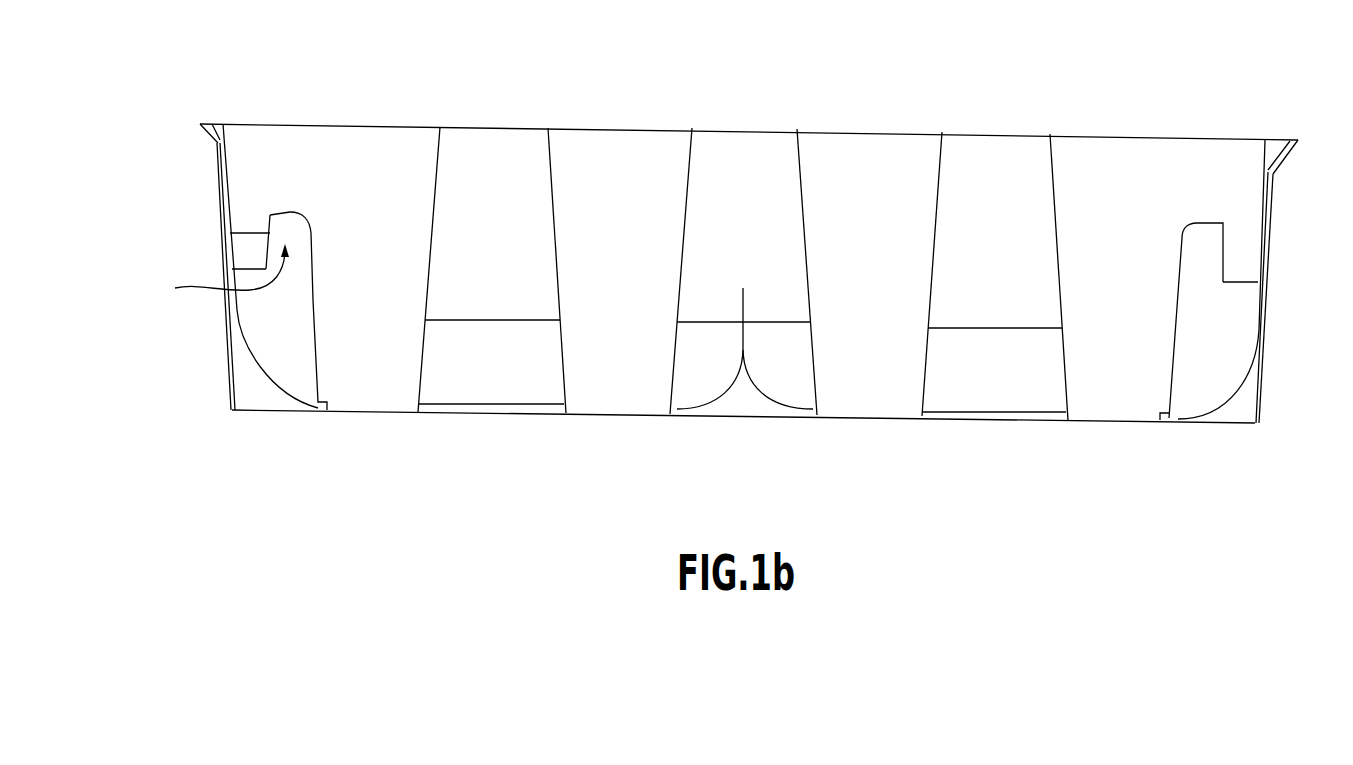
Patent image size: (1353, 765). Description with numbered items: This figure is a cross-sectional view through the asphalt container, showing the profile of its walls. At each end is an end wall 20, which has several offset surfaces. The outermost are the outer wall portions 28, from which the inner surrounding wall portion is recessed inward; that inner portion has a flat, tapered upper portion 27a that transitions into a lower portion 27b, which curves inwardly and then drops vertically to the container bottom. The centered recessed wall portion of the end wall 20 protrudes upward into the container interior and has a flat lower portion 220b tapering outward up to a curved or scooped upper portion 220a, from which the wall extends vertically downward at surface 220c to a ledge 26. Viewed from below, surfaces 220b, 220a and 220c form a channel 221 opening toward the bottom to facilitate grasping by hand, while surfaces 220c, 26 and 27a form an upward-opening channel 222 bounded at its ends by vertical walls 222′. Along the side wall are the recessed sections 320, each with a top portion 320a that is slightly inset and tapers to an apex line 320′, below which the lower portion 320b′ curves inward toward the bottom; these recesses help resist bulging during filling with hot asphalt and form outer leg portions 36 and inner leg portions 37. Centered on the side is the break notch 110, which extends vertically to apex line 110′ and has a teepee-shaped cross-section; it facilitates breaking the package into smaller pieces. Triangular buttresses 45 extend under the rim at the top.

The end wall 20 is at (1262, 383).
The ledge 26 is at (247, 260).
The upper portion of inner surrounding wall portion 27a is at (228, 155).
The lower portion of inner surrounding wall portion 27b is at (233, 368).
The outer wall portions 28 is at (231, 382).
The outer leg portions 36 is at (402, 207).
The inner leg portions 37 is at (885, 185).
The buttresses 45 is at (216, 139).
The break notch 110 is at (747, 398).
The apex line 110′ is at (745, 300).
The upper portion of recessed wall portion 220a is at (298, 214).
The lower portion of recessed wall portion 220b is at (317, 343).
The vertical surface 220c is at (270, 213).
The channel 221 is at (202, 275).
The upward-opening channel 222 is at (245, 218).
The vertical walls 222′ is at (247, 243).
The recessed section 320 is at (515, 175).
The top portion of recessed section 320a is at (1030, 247).
The apex line 320′ is at (1023, 328).
The compartment lower portion 320b′ is at (1037, 372).